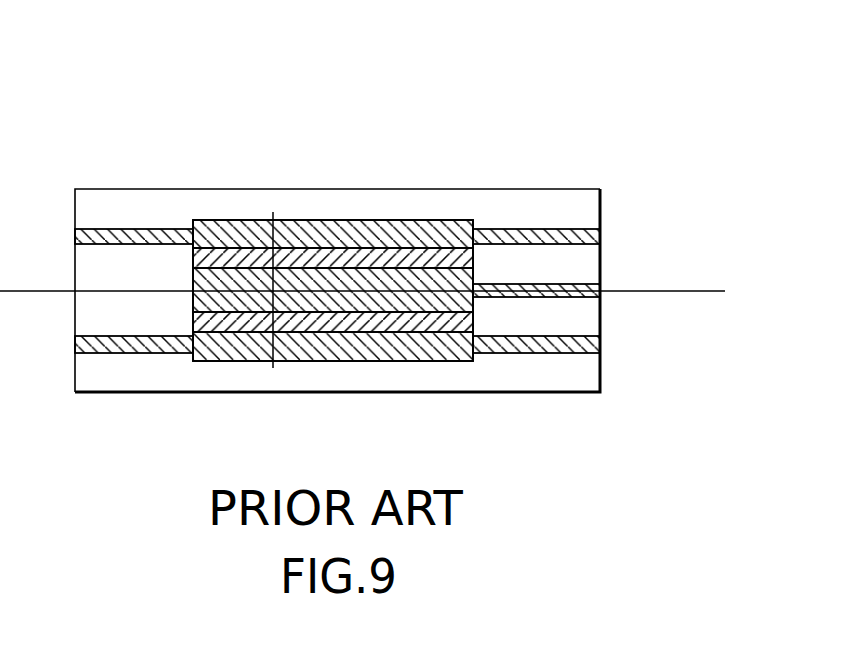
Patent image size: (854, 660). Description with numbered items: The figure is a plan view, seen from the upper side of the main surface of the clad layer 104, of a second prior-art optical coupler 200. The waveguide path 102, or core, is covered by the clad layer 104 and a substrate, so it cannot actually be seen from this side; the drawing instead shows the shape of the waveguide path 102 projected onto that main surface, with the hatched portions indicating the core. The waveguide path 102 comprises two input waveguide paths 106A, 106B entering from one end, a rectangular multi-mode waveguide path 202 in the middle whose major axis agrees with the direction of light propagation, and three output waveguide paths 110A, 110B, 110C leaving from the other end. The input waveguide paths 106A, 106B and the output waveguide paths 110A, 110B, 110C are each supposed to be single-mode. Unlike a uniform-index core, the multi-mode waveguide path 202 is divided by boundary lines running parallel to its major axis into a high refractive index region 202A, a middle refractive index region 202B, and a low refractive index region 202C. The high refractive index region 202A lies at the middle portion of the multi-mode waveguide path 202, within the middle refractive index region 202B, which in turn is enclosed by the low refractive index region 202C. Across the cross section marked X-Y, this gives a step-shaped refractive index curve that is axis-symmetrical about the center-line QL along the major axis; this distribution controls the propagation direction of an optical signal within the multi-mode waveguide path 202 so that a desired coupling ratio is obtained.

The second prior-art coupler 200 is at (625, 65).
The waveguide path 102 is at (603, 90).
The clad layer 104 is at (122, 380).
The input waveguide path 106A is at (93, 231).
The input waveguide path 106B is at (125, 337).
The output waveguide path 110A is at (498, 229).
The output waveguide path 110B is at (535, 283).
The output waveguide path 110C is at (577, 337).
The multi-mode waveguide path 202 is at (437, 138).
The high refractive index region 202A is at (228, 278).
The middle refractive index region 202B is at (333, 313).
The low refractive index region 202C is at (418, 342).